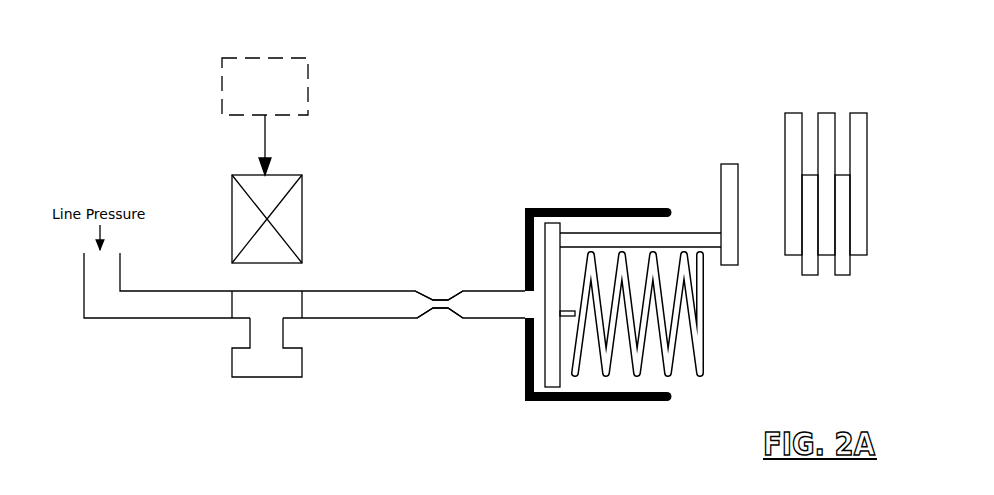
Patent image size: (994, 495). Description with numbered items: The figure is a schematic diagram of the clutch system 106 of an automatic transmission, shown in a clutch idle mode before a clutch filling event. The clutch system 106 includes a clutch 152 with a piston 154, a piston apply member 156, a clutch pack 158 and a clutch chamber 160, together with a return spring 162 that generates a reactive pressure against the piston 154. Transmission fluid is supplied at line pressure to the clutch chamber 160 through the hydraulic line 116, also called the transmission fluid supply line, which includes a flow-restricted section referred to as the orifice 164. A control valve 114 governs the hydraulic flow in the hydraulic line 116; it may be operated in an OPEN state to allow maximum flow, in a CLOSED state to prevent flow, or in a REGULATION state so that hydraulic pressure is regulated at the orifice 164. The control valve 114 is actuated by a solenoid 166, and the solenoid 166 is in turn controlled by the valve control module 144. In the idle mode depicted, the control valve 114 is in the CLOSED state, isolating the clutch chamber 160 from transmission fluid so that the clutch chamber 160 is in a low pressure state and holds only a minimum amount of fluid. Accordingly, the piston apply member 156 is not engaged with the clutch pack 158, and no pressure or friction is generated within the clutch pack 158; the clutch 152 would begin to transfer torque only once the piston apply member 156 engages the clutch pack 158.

The clutch system 106 is at (150, 58).
The control valve 114 is at (250, 332).
The hydraulic line 116 is at (395, 318).
The valve control module 144 is at (308, 80).
The clutch 152 is at (538, 195).
The piston 154 is at (563, 382).
The piston apply member 156 is at (722, 190).
The clutch pack 158 is at (785, 113).
The clutch chamber 160 is at (535, 305).
The return spring 162 is at (707, 355).
The orifice 164 is at (440, 300).
The solenoid 166 is at (303, 198).